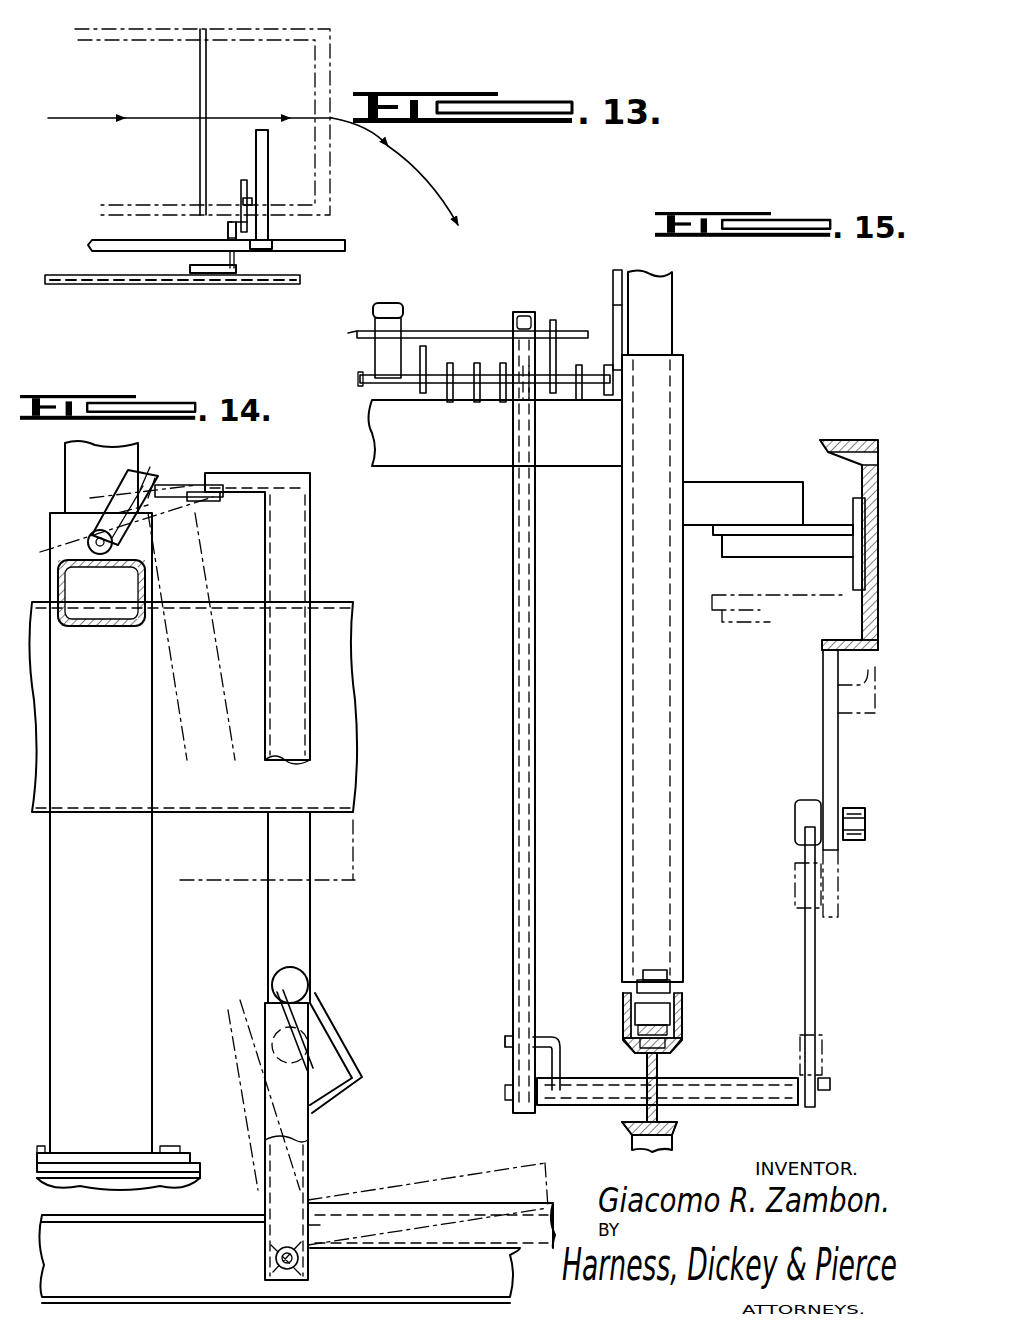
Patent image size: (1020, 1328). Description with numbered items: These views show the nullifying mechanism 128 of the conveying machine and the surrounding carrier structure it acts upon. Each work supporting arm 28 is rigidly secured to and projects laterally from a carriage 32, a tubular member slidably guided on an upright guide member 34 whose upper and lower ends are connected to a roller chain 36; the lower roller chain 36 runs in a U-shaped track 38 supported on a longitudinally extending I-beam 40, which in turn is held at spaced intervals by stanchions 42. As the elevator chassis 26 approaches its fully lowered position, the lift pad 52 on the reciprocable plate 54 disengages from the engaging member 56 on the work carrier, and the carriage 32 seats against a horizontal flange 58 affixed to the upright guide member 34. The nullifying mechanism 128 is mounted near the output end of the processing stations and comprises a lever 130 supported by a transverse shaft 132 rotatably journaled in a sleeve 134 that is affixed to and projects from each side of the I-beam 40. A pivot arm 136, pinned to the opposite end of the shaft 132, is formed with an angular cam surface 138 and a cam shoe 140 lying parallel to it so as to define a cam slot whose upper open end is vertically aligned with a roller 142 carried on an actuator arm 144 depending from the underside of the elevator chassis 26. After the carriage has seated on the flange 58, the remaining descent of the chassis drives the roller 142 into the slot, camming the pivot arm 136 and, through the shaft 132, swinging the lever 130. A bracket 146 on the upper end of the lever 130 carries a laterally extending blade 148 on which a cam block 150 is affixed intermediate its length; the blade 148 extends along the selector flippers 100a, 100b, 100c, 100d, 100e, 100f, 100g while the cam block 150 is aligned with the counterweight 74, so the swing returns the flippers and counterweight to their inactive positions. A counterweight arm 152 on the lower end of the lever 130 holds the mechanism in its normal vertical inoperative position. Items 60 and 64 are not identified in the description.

In FIG. 15, the elevator chassis 26 is at (838, 680).
In FIG. 13, the work supporting arm 28 is at (266, 177).
In FIG. 15, the work supporting arm 28 is at (428, 466).
In FIG. 14, the work supporting arm 28 is at (98, 630).
In FIG. 15, the carriage 32 is at (668, 398).
In FIG. 14, the carriage 32 is at (152, 917).
In FIG. 15, the upright guide member 34 is at (672, 290).
In FIG. 14, the upright guide member 34 is at (72, 458).
In FIG. 15, the roller chain 36 is at (672, 1008).
In FIG. 15, the U-shaped track 38 is at (682, 1020).
In FIG. 13, the I-beam 40 is at (90, 244).
In FIG. 15, the I-beam 40 is at (660, 1125).
In FIG. 14, the I-beam 40 is at (279, 1259).
In FIG. 15, the stanchion 42 is at (632, 1143).
In FIG. 15, the lift pad 52 is at (738, 528).
In FIG. 15, the reciprocable plate 54 is at (853, 568).
In FIG. 15, the engaging member 56 is at (836, 470).
In FIG. 15, the horizontal flange 58 is at (672, 985).
In FIG. 14, the horizontal flange 58 is at (182, 1158).
In FIG. 15, the horizontal rod 60 is at (358, 371).
In FIG. 15, the guide bar 64 is at (612, 272).
In FIG. 15, the counterweight 74 is at (392, 303).
In FIG. 14, the counterweight 74 is at (136, 476).
In FIG. 15, the selector flipper 100a is at (576, 392).
In FIG. 15, the selector flipper 100b is at (555, 320).
In FIG. 15, the selector flipper 100c is at (530, 420).
In FIG. 15, the selector flipper 100d is at (500, 405).
In FIG. 15, the selector flipper 100e is at (472, 405).
In FIG. 15, the selector flipper 100f is at (445, 400).
In FIG. 15, the selector flipper 100g is at (428, 350).
In FIG. 14, the selector flipper 100g is at (120, 540).
In FIG. 13, the nullifying mechanism 128 is at (225, 235).
In FIG. 15, the nullifying mechanism 128 is at (538, 902).
In FIG. 14, the nullifying mechanism 128 is at (312, 590).
In FIG. 15, the lever 130 is at (519, 548).
In FIG. 14, the lever 130 is at (278, 762).
In FIG. 15, the transverse shaft 132 is at (585, 1080).
In FIG. 14, the transverse shaft 132 is at (270, 1260).
In FIG. 13, the sleeve 134 is at (248, 264).
In FIG. 15, the sleeve 134 is at (705, 1080).
In FIG. 14, the sleeve 134 is at (310, 1262).
In FIG. 15, the pivot arm 136 is at (815, 960).
In FIG. 14, the pivot arm 136 is at (290, 1118).
In FIG. 14, the angular cam surface 138 is at (268, 1004).
In FIG. 14, the cam shoe 140 is at (328, 1005).
In FIG. 15, the roller 142 is at (795, 885).
In FIG. 14, the roller 142 is at (302, 982).
In FIG. 15, the actuator arm 144 is at (823, 748).
In FIG. 14, the actuator arm 144 is at (300, 912).
In FIG. 15, the bracket 146 is at (524, 312).
In FIG. 14, the bracket 146 is at (258, 473).
In FIG. 15, the blade 148 is at (356, 331).
In FIG. 14, the blade 148 is at (215, 501).
In FIG. 15, the cam block 150 is at (408, 331).
In FIG. 14, the cam block 150 is at (172, 485).
In FIG. 14, the counterweight arm 152 is at (447, 1212).